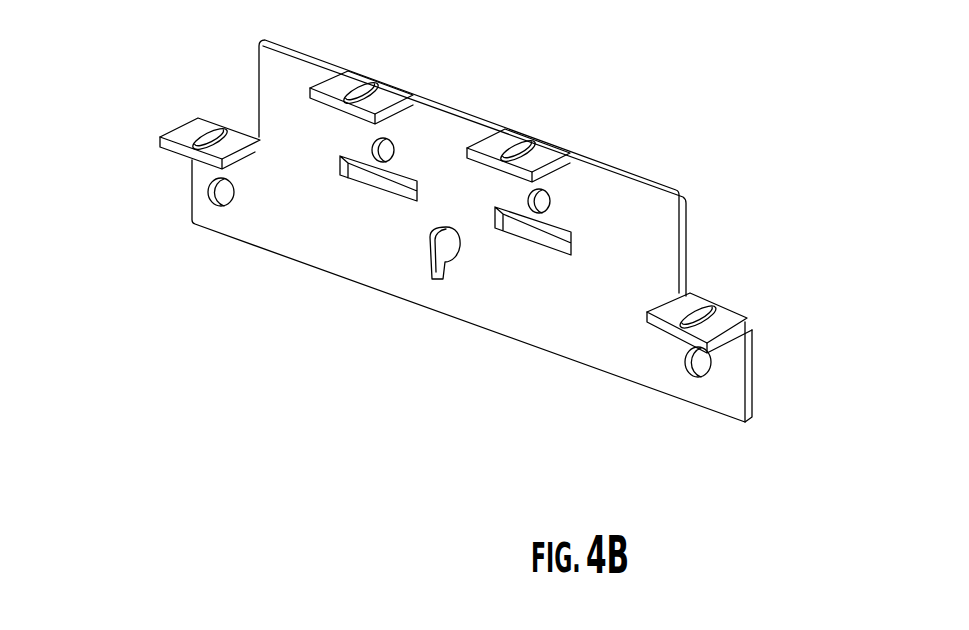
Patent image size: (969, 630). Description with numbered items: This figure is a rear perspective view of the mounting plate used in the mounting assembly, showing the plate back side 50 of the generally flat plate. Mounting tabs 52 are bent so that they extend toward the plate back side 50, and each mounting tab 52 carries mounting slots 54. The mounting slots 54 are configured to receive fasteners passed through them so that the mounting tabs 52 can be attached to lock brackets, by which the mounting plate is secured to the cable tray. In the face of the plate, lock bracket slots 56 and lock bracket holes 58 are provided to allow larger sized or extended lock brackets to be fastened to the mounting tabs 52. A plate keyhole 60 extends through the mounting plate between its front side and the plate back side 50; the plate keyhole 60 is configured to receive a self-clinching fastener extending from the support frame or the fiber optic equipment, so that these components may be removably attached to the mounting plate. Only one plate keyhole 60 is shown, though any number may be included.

The plate back side 50 is at (440, 231).
The mounting tabs 52 is at (464, 210).
The mounting slots 54 is at (453, 190).
The lock bracket slots 56 is at (394, 275).
The lock bracket holes 58 is at (458, 195).
The plate keyhole 60 is at (413, 284).